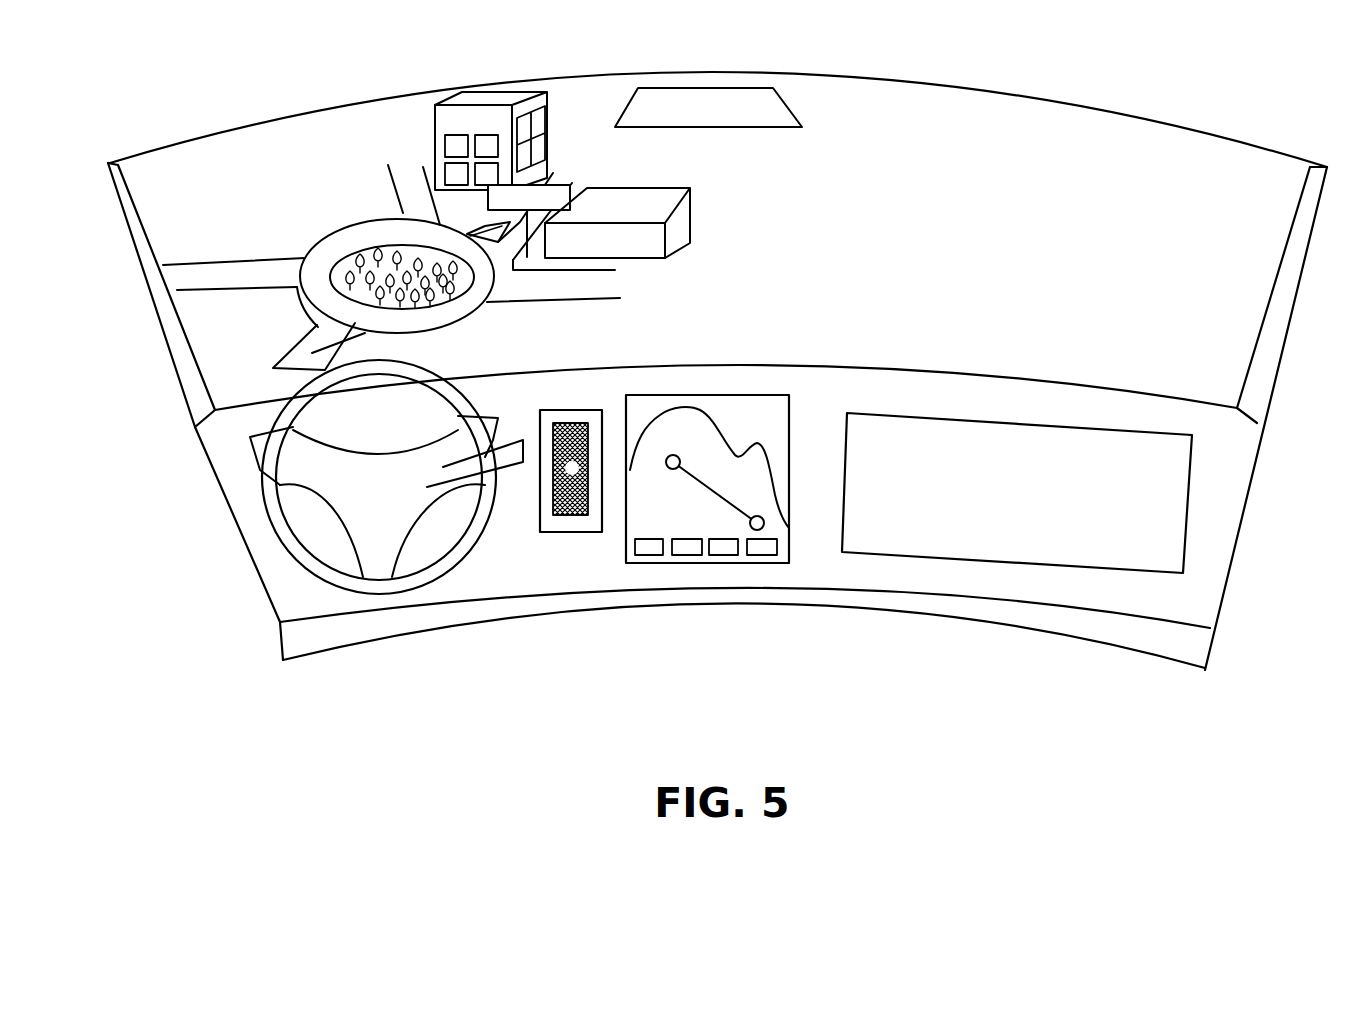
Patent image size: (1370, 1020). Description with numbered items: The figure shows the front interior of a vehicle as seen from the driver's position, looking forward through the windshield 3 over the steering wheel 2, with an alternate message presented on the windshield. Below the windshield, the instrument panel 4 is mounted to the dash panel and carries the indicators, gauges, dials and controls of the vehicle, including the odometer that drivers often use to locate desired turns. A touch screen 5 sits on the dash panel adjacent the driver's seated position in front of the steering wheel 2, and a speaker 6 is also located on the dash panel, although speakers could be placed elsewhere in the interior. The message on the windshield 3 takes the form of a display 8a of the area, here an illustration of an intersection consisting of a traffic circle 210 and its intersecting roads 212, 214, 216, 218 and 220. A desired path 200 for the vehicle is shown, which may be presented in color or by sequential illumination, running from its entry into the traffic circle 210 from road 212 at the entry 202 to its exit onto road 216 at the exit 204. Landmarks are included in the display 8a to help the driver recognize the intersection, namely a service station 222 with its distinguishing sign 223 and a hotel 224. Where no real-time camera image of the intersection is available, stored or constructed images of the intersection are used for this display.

The steering wheel 2 is at (388, 582).
The windshield 3 is at (207, 248).
The instrument panel 4 is at (260, 447).
The touch screen 5 is at (740, 557).
The speaker 6 is at (588, 530).
The display 8a is at (398, 115).
The desired path 200 is at (480, 302).
The entry 202 is at (343, 351).
The exit 204 is at (475, 213).
The traffic circle 210 is at (374, 241).
The road 212 is at (309, 326).
The road 214 is at (552, 300).
The road 216 is at (572, 182).
The road 218 is at (402, 182).
The road 220 is at (263, 273).
The service station 222 is at (683, 233).
The sign 223 is at (562, 175).
The hotel 224 is at (548, 102).